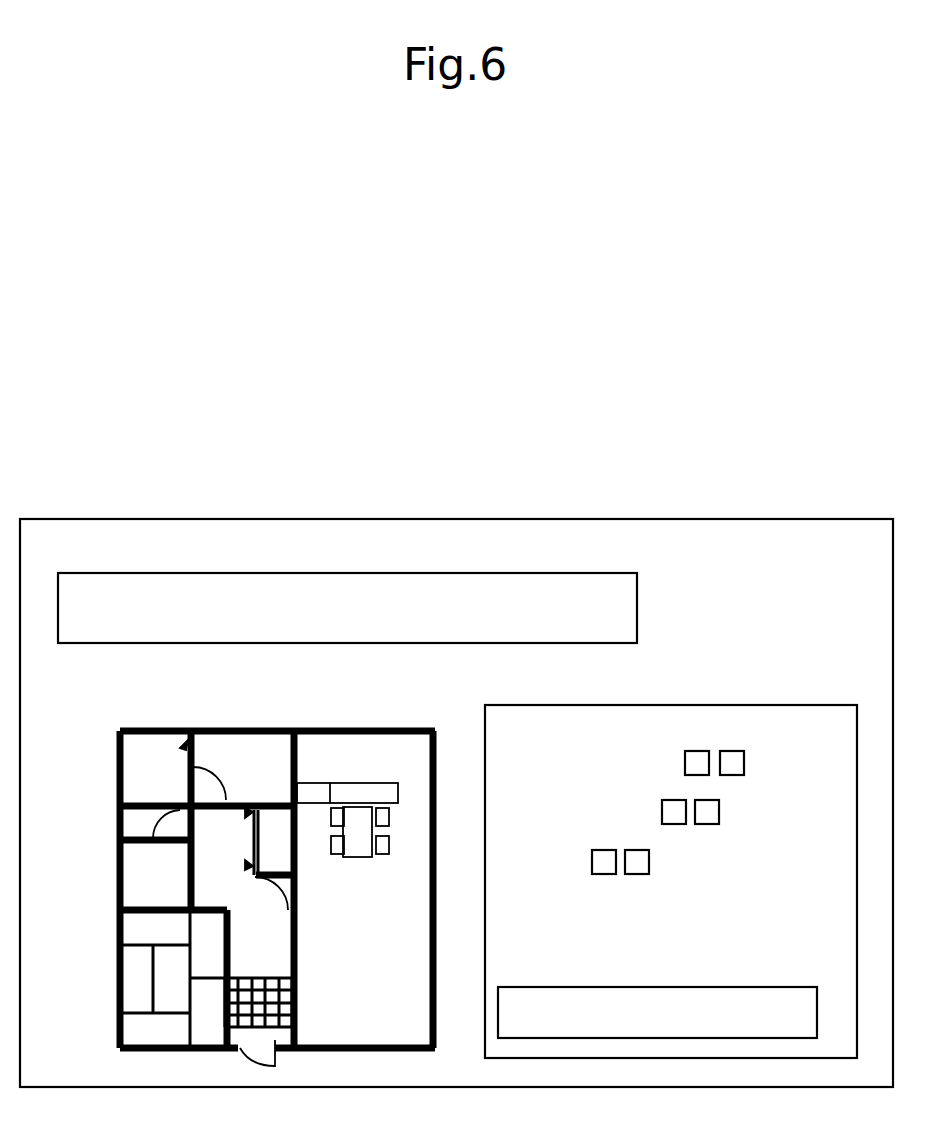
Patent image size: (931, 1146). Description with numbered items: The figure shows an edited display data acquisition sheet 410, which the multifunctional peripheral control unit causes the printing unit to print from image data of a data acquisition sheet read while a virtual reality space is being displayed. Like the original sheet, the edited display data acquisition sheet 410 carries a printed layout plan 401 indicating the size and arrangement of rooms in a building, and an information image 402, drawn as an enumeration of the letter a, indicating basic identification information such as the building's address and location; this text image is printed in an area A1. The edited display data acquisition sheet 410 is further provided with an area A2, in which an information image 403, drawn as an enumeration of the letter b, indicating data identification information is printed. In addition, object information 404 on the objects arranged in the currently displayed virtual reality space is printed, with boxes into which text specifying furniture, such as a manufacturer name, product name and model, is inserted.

The edited display data acquisition sheet 410 is at (780, 520).
The information image 402 is at (320, 598).
The area A1 is at (543, 573).
The layout plan 401 is at (345, 718).
The object information 404 is at (745, 818).
The information image 403 is at (608, 1003).
The area A2 is at (748, 987).